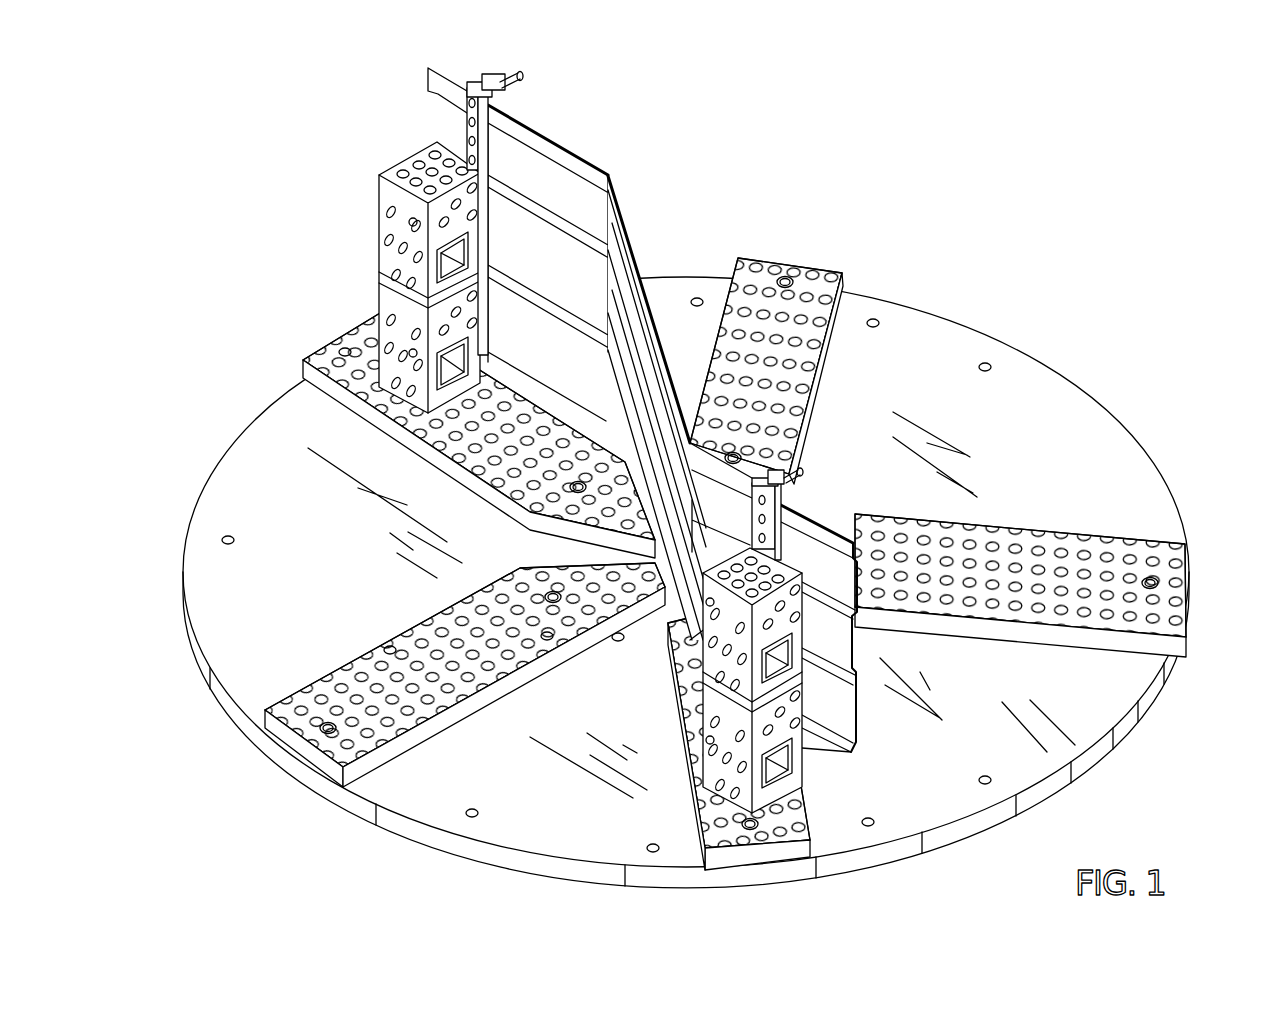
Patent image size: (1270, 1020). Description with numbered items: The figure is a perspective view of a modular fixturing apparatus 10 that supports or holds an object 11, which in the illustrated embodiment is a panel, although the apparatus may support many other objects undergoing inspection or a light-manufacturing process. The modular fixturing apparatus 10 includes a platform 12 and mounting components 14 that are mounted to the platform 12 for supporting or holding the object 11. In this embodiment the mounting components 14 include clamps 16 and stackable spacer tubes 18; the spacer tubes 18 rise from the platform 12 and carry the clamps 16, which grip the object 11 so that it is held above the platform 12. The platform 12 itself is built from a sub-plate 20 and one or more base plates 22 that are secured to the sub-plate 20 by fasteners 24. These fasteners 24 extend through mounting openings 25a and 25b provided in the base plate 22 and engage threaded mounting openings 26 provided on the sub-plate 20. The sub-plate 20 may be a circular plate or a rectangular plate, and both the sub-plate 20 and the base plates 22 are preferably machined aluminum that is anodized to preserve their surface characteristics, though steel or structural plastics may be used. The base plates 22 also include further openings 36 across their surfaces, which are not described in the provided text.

The modular fixturing apparatus 10 is at (1078, 252).
The object 11 is at (585, 148).
The platform 12 is at (1073, 377).
The mounting components 14 is at (601, 291).
The clamps 16 is at (650, 291).
The stackable spacer tubes 18 is at (381, 220).
The sub-plate 20 is at (1117, 437).
The base plates 22 is at (733, 543).
The fasteners 24 is at (546, 594).
The mounting opening 25a is at (1158, 584).
The mounting opening 25b is at (580, 482).
The threaded mounting openings 26 is at (986, 363).
The arm hole 36 is at (345, 348).